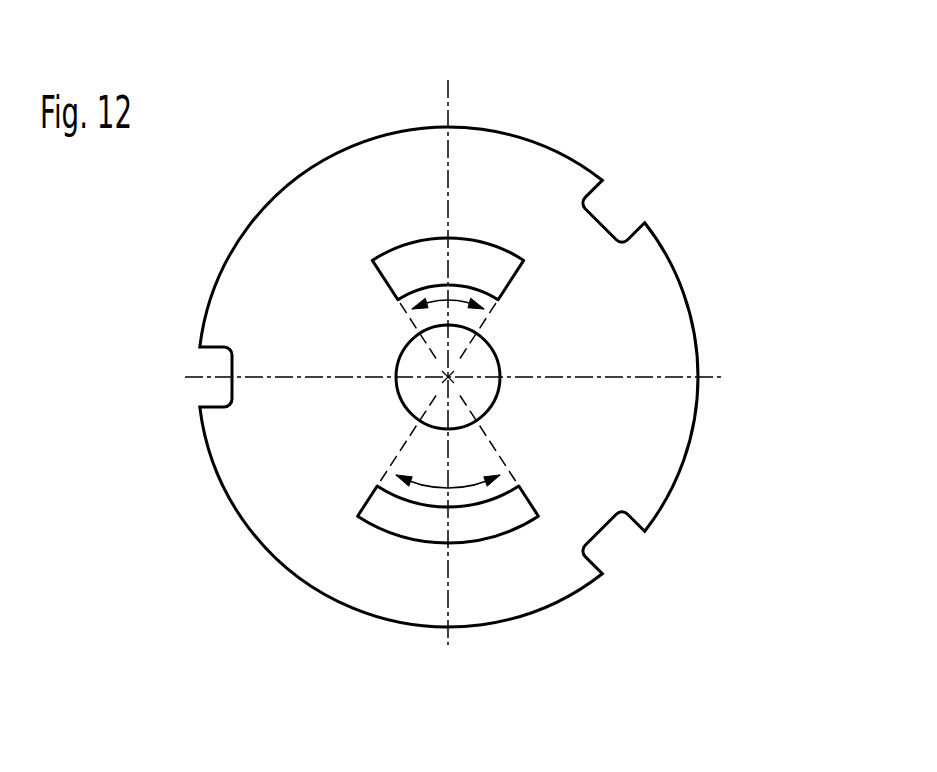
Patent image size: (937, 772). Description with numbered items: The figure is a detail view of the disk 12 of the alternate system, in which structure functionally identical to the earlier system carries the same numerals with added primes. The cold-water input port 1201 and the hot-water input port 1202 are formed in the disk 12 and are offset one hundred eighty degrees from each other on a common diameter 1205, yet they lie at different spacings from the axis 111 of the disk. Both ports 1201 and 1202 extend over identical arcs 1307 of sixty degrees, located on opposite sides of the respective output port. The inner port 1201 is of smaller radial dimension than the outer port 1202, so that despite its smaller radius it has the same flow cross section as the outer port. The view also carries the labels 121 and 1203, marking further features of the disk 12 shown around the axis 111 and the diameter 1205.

The disk 12 is at (760, 155).
The axis 111 is at (448, 377).
The disc body 121 is at (648, 303).
The cold-water input port 1201 is at (391, 517).
The hot-water input port 1202 is at (413, 275).
The bore edge 1203 is at (402, 402).
The diameter 1205 is at (450, 108).
The arc 1307 is at (457, 485).